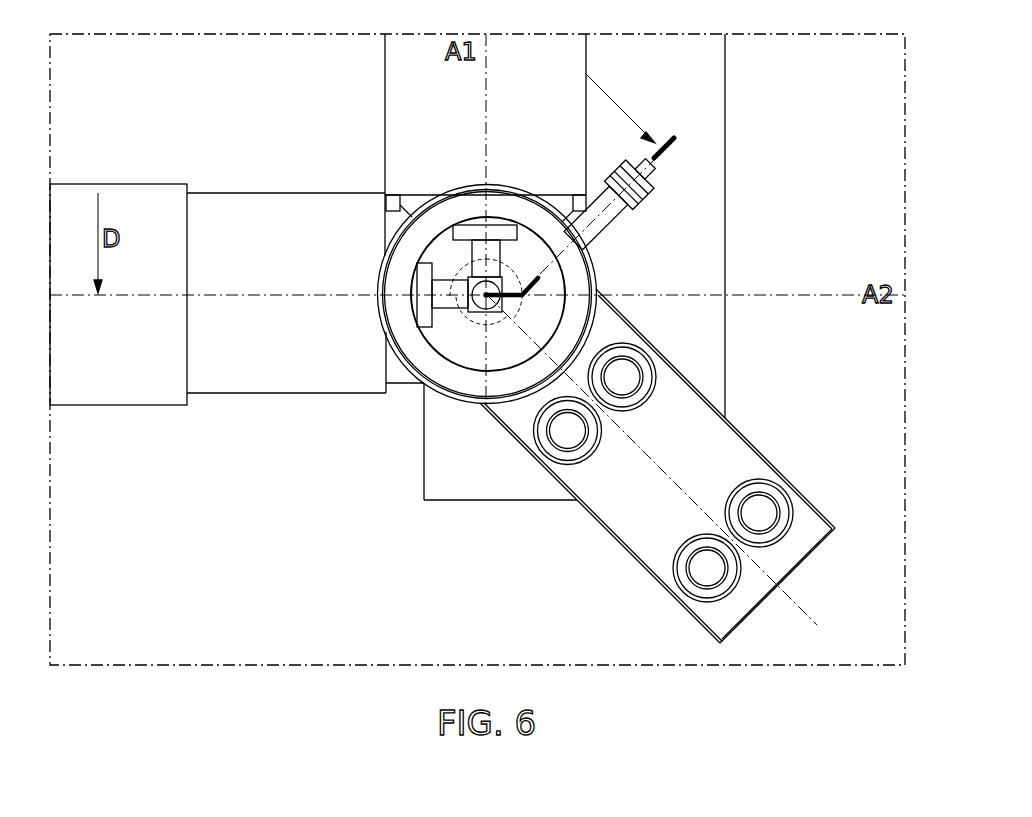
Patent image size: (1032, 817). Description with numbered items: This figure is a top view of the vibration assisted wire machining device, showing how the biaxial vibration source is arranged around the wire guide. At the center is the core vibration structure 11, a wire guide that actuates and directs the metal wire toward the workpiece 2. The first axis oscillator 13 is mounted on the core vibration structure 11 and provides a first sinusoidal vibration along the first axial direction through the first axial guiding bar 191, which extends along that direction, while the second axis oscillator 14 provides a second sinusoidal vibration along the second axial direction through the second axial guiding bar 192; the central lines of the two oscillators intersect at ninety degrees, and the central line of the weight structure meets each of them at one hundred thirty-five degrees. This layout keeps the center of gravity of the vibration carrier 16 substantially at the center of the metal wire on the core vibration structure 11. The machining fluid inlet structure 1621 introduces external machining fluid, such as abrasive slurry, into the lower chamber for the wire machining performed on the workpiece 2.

The workpiece 2 is at (657, 338).
The core vibration structure 11 is at (465, 380).
The first axis oscillator 13 is at (420, 90).
The second axis oscillator 14 is at (295, 370).
The vibration carrier 16 is at (490, 390).
The first axial guiding bar 191 is at (387, 223).
The second axial guiding bar 192 is at (450, 362).
The machining fluid inlet structure 1621 is at (622, 228).